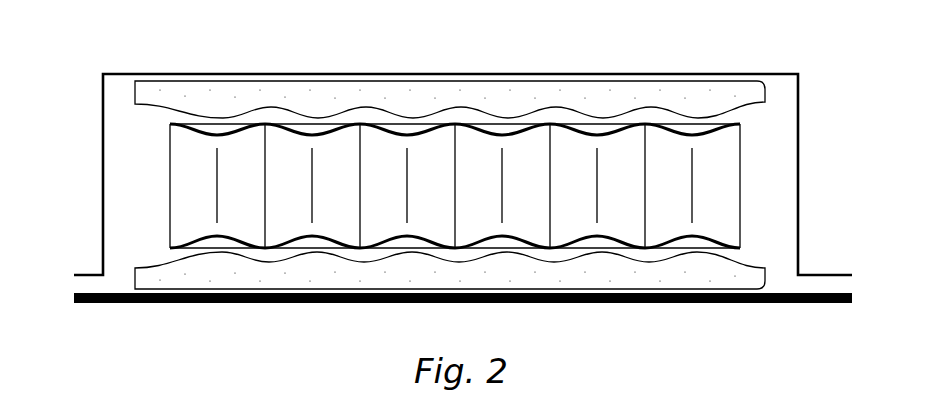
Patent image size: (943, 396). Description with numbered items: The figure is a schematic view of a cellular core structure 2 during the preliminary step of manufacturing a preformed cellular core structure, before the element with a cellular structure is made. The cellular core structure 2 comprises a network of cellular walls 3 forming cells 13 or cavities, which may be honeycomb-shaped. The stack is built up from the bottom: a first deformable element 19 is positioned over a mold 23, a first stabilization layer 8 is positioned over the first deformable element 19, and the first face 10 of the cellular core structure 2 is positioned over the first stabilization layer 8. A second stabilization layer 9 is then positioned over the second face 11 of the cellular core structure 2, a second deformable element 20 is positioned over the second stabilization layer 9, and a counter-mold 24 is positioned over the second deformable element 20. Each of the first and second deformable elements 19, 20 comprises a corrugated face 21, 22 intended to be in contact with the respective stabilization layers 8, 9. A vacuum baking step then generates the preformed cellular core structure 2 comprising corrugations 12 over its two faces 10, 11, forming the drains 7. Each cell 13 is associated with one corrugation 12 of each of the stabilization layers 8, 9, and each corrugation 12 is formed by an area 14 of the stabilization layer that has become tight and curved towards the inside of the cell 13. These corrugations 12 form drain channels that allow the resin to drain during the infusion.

The cellular core structure 2 is at (742, 172).
The cellular walls 3 is at (411, 186).
The drains 7 is at (411, 188).
The first stabilization layer 8 is at (186, 240).
The second stabilization layer 9 is at (186, 130).
The first face 10 is at (556, 270).
The second face 11 is at (577, 116).
The corrugations 12 is at (411, 188).
The cells 13 is at (472, 136).
The area 14 is at (243, 228).
The first deformable element 19 is at (148, 279).
The second deformable element 20 is at (397, 76).
The corrugated face 21 is at (501, 236).
The corrugated face 22 is at (335, 135).
The mold 23 is at (336, 304).
The counter-mold 24 is at (265, 74).